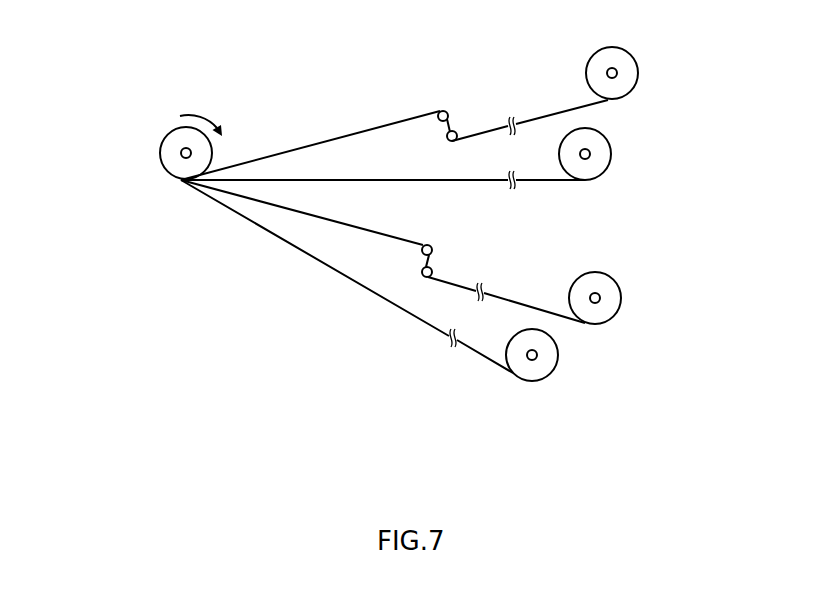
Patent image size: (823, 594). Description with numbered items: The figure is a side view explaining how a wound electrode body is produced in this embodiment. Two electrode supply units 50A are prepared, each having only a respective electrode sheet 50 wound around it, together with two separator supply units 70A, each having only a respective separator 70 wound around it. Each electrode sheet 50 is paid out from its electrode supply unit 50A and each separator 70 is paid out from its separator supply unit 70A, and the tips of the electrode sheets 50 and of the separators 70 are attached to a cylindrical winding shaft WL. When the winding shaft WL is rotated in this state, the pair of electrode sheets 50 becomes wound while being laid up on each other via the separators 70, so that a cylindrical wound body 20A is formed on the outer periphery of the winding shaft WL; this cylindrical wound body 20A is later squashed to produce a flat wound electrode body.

The winding shaft WL is at (182, 151).
The cylindrical wound body 20A is at (163, 165).
The electrode sheet 50 is at (385, 125).
The electrode supply unit 50A is at (618, 73).
The separator 70 is at (385, 180).
The separator supply unit 70A is at (591, 155).